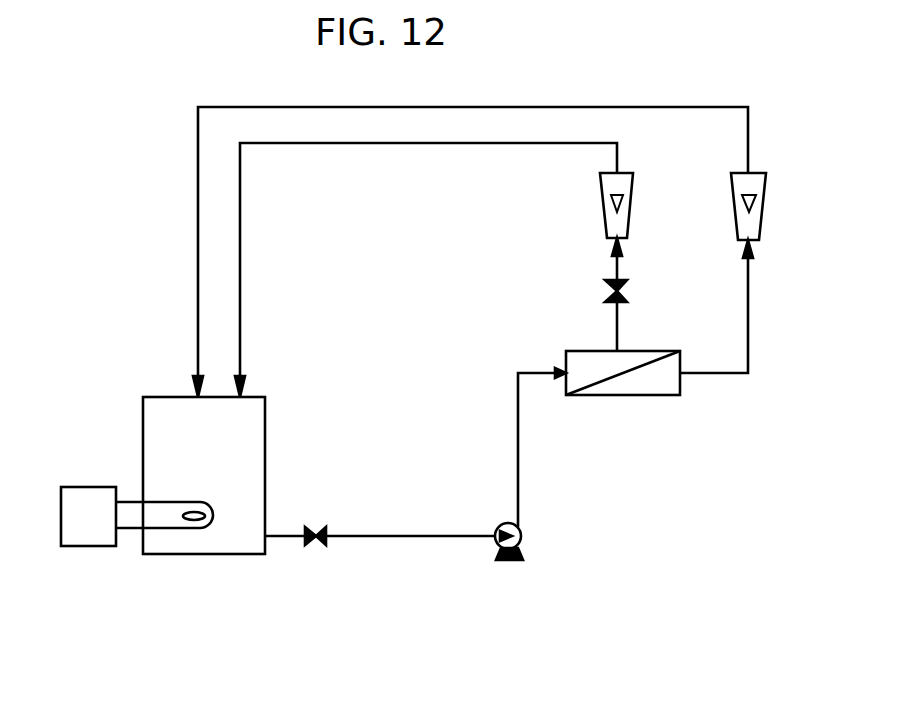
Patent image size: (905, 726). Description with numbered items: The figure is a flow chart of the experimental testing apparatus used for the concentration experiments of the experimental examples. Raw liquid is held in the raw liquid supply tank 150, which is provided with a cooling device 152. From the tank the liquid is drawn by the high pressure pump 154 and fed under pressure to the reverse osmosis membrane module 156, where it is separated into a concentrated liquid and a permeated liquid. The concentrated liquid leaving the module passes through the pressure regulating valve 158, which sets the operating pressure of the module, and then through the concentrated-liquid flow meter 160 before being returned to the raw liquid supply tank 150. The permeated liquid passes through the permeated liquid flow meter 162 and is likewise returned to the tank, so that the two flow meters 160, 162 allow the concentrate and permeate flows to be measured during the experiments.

The raw liquid supply tank 150 is at (207, 556).
The cooling device 152 is at (80, 548).
The high pressure pump 154 is at (522, 534).
The reverse osmosis membrane module 156 is at (612, 395).
The pressure regulating valve 158 is at (622, 285).
The concentrated-liquid flow meter 160 is at (605, 205).
The permeated liquid flow meter 162 is at (767, 205).